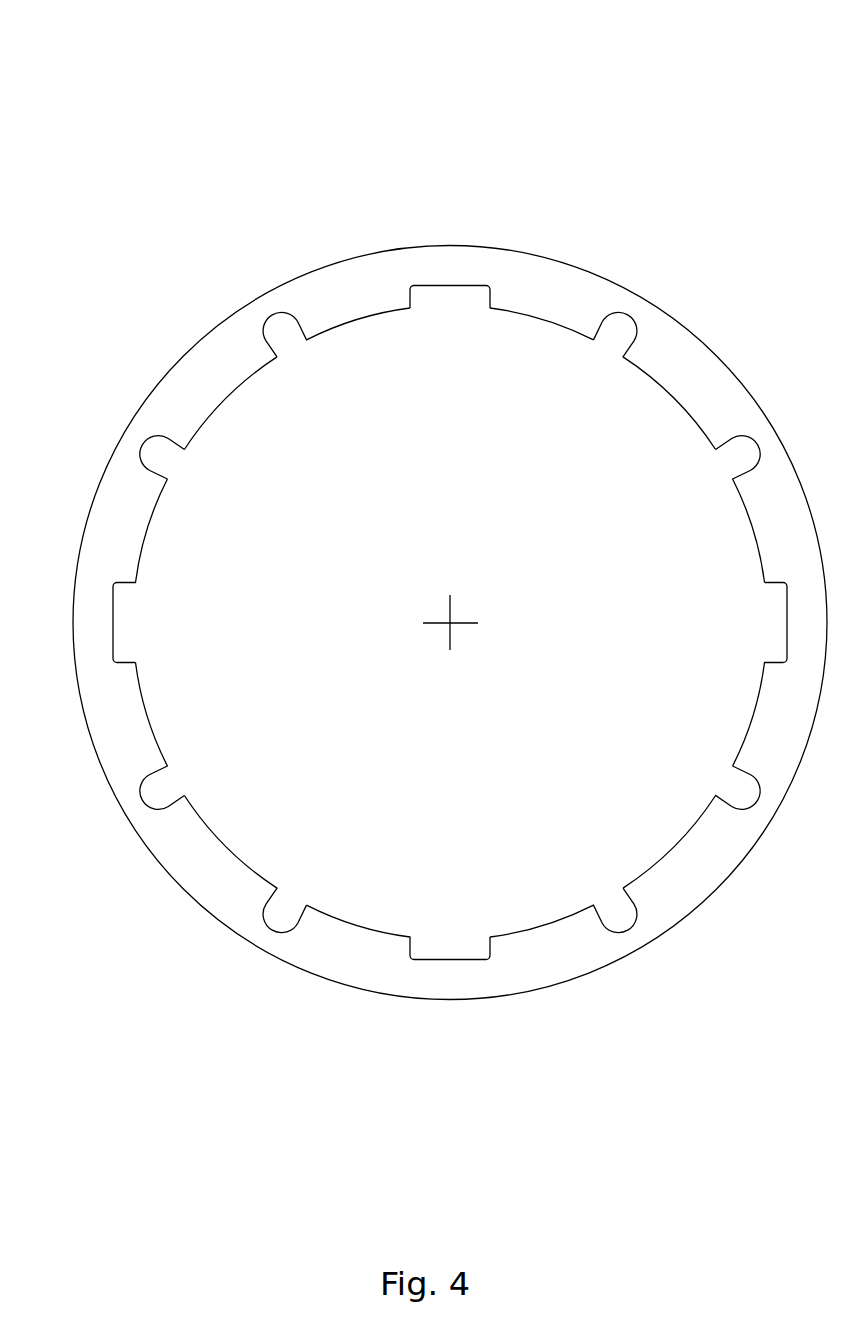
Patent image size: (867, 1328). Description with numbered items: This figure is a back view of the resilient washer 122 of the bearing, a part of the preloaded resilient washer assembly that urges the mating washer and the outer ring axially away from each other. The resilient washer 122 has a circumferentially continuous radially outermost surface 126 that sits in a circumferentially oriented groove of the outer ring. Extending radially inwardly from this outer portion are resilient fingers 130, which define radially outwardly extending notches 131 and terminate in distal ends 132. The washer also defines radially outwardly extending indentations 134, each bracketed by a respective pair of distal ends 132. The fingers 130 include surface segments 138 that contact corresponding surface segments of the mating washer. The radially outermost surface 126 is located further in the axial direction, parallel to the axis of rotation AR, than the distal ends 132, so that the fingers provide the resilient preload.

The resilient washer 122 is at (673, 72).
The radially outermost surface 126 is at (480, 245).
The resilient fingers 130 is at (218, 365).
The surface segments 138 is at (342, 312).
The distal ends 132 is at (675, 398).
The radially outwardly extending indentations 134 is at (447, 300).
The radially outwardly extending notches 131 is at (158, 455).
The axis of rotation AR is at (450, 623).